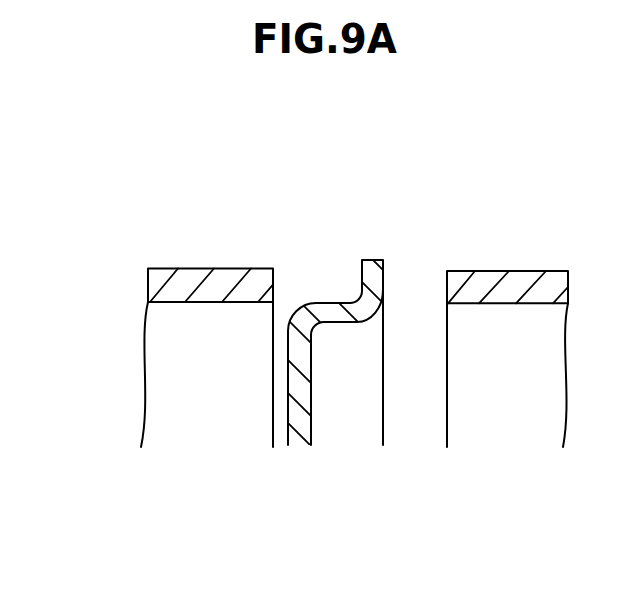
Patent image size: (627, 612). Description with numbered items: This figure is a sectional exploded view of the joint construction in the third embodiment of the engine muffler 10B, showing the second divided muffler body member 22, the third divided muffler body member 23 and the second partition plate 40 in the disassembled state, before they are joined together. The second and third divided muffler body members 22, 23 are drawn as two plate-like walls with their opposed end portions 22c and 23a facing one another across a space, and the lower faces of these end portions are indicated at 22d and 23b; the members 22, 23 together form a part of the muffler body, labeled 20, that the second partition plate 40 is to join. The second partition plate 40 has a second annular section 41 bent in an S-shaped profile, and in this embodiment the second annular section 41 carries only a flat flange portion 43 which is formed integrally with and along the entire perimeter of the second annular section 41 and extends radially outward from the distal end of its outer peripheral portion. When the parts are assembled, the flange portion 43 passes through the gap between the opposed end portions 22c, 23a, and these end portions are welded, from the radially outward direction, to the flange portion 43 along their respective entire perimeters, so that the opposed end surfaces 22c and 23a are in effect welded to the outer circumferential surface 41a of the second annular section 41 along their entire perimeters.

The engine muffler 10B is at (223, 125).
The separator 20 is at (368, 290).
The second divided muffler body member 22 is at (171, 266).
The opposed end portion of the second divided muffler body member 22c is at (236, 276).
The inner surface of first plate 22d is at (247, 302).
The third divided muffler body member 23 is at (536, 270).
The opposed end portion of the third divided muffler body member 23a is at (478, 282).
The inner surface of second plate 23b is at (465, 307).
The second partition plate 40 is at (298, 445).
The second annular section 41 is at (323, 310).
The outer circumferential surface of the second annular section 41a is at (342, 303).
The flat flange portion 43 is at (374, 265).